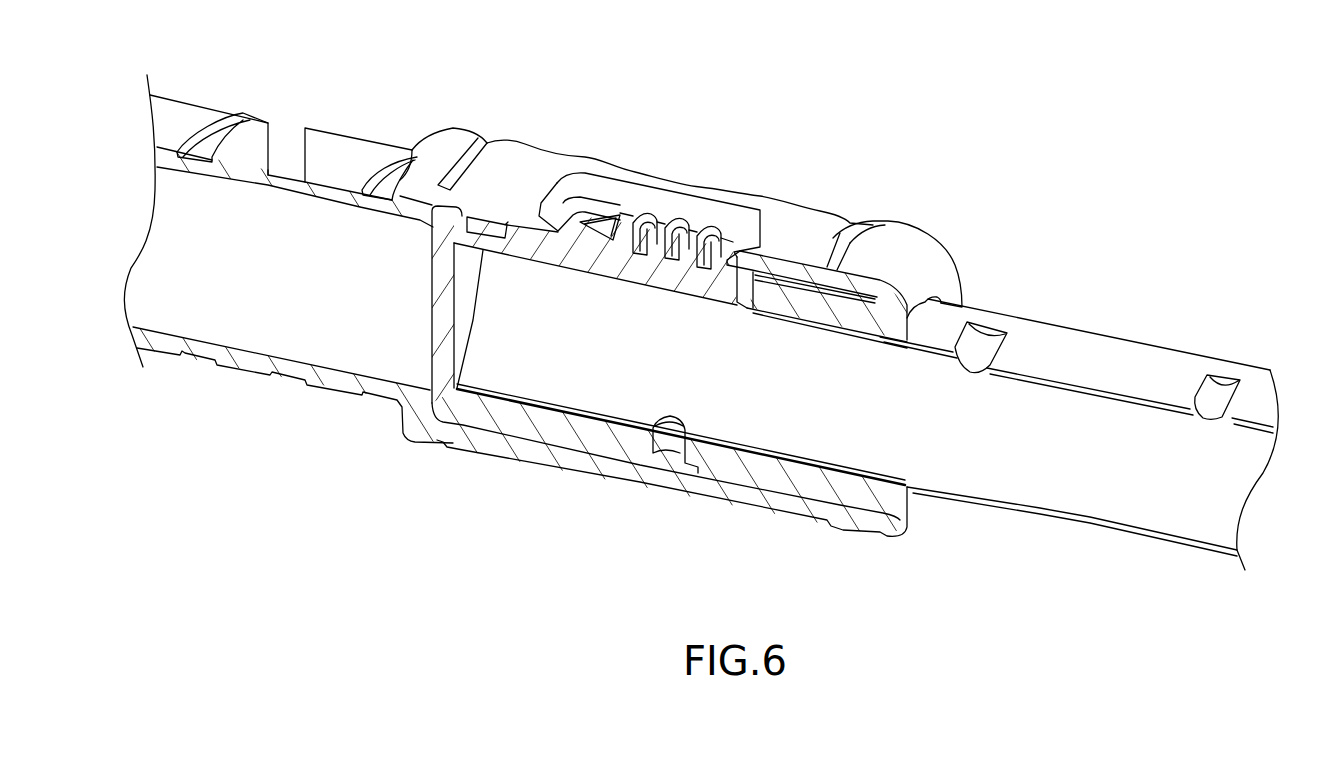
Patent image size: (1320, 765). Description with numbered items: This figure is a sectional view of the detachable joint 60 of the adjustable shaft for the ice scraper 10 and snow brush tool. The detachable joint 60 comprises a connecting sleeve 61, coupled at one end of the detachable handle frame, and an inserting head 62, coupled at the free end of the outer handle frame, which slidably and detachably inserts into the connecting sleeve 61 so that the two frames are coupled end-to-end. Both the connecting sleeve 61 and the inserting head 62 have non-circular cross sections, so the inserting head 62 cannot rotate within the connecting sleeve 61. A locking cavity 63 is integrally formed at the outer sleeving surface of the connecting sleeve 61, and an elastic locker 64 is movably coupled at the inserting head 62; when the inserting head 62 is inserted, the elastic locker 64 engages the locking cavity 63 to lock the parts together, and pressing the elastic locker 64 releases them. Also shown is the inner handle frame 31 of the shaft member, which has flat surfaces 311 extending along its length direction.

The ice scraper 10 is at (253, 363).
The inner handle frame 31 is at (1093, 357).
The flat surface 311 is at (1220, 368).
The detachable joint 60 is at (883, 107).
The connecting sleeve 61 is at (827, 223).
The inserting head 62 is at (537, 245).
The locking cavity 63 is at (702, 205).
The elastic locker 64 is at (630, 212).